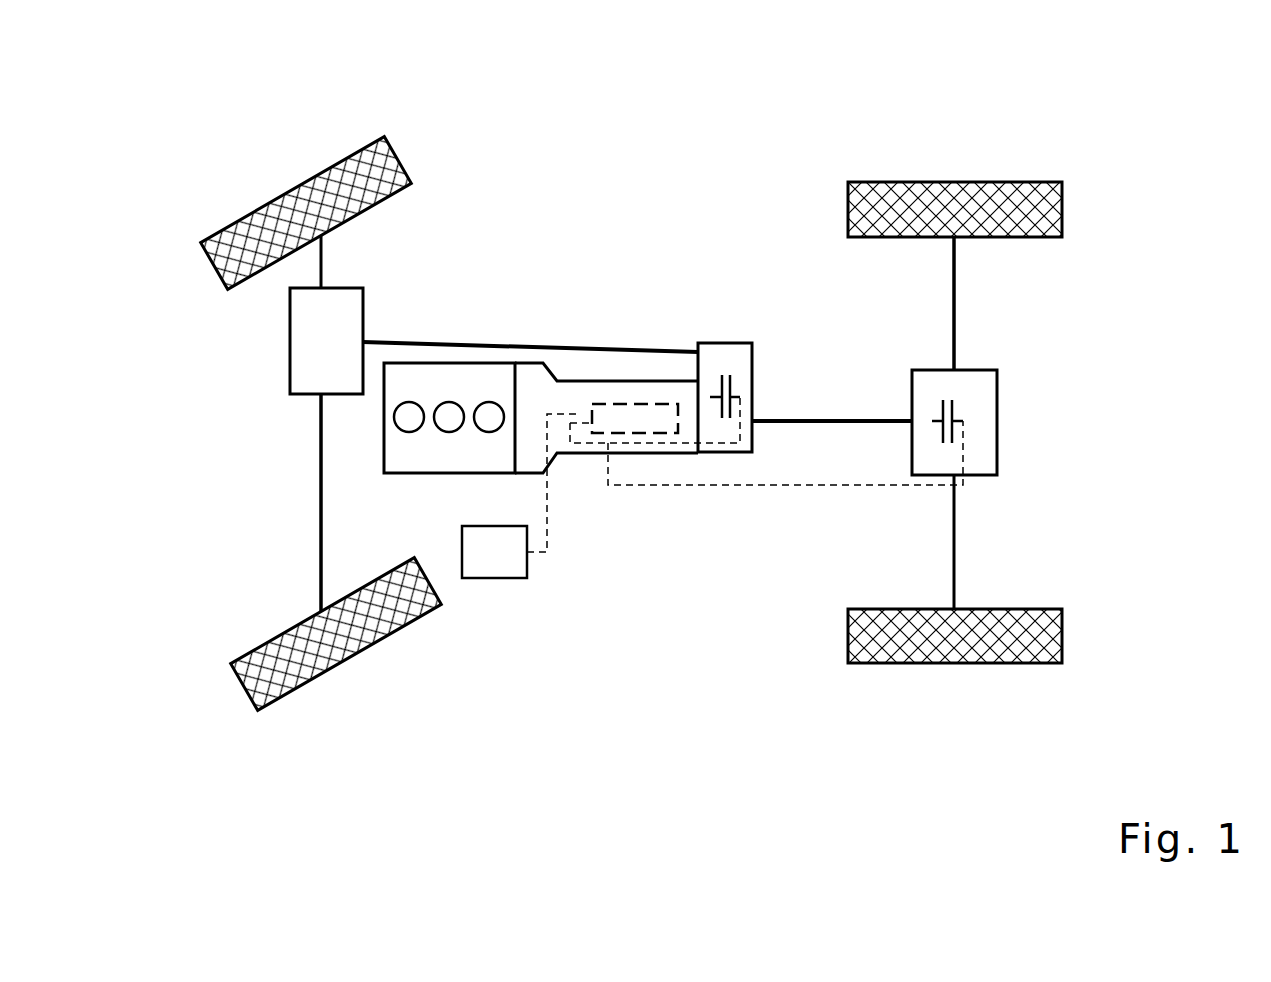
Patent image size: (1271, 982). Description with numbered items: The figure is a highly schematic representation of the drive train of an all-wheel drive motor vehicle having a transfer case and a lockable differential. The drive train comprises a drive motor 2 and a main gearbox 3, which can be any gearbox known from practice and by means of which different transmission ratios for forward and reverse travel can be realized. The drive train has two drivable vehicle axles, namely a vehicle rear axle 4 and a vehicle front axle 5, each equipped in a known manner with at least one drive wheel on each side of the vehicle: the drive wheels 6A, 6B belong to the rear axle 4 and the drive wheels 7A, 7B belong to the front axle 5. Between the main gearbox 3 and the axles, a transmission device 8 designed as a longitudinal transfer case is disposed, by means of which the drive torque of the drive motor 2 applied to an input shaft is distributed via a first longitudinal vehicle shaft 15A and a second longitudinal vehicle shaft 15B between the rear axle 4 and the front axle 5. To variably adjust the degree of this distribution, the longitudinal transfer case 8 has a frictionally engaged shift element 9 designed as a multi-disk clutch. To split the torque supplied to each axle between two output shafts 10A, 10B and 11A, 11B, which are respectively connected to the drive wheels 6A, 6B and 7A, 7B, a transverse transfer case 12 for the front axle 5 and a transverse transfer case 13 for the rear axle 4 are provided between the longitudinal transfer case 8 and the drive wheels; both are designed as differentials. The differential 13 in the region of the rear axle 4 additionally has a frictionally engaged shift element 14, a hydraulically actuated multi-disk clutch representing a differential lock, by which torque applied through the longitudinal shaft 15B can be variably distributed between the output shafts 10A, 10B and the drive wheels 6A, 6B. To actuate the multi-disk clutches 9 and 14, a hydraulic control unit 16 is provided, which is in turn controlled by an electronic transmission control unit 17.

The drive motor 2 is at (415, 378).
The main gearbox 3 is at (533, 378).
The vehicle rear axle 4 is at (957, 270).
The vehicle front axle 5 is at (319, 549).
The drive wheel 6A is at (896, 642).
The drive wheel 6B is at (967, 197).
The drive wheel 7A is at (324, 663).
The drive wheel 7B is at (295, 208).
The transmission device 8 is at (715, 350).
The frictionally engaged shift element 9 is at (730, 382).
The output shaft 10A is at (954, 557).
The output shaft 10B is at (953, 312).
The output shaft 11A is at (318, 427).
The output shaft 11B is at (318, 262).
The transverse transfer case 12 is at (304, 351).
The transverse transfer case 13 is at (978, 387).
The frictionally engaged shift element 14 is at (952, 412).
The first longitudinal vehicle shaft 15A is at (477, 343).
The second longitudinal vehicle shaft 15B is at (796, 415).
The hydraulic control unit 16 is at (655, 433).
The electronic transmission control unit 17 is at (494, 570).